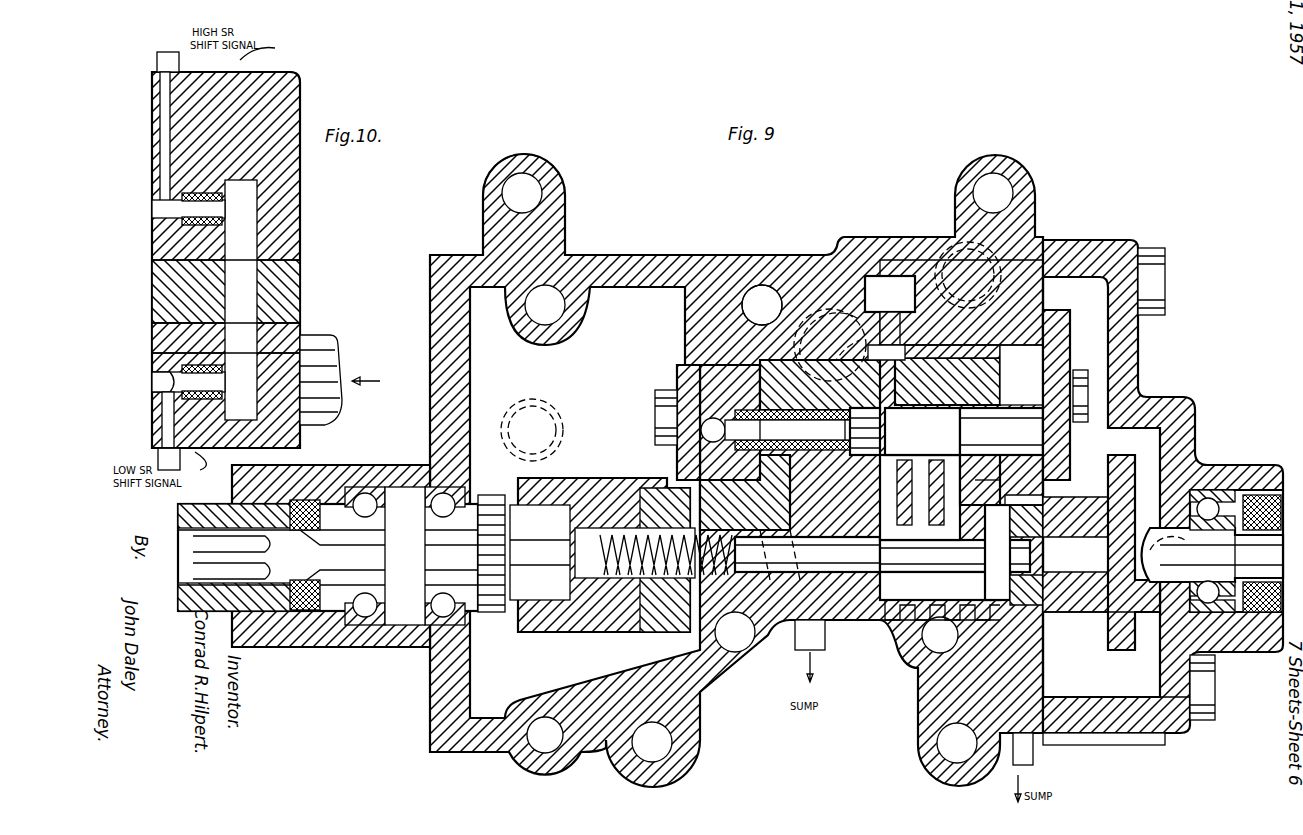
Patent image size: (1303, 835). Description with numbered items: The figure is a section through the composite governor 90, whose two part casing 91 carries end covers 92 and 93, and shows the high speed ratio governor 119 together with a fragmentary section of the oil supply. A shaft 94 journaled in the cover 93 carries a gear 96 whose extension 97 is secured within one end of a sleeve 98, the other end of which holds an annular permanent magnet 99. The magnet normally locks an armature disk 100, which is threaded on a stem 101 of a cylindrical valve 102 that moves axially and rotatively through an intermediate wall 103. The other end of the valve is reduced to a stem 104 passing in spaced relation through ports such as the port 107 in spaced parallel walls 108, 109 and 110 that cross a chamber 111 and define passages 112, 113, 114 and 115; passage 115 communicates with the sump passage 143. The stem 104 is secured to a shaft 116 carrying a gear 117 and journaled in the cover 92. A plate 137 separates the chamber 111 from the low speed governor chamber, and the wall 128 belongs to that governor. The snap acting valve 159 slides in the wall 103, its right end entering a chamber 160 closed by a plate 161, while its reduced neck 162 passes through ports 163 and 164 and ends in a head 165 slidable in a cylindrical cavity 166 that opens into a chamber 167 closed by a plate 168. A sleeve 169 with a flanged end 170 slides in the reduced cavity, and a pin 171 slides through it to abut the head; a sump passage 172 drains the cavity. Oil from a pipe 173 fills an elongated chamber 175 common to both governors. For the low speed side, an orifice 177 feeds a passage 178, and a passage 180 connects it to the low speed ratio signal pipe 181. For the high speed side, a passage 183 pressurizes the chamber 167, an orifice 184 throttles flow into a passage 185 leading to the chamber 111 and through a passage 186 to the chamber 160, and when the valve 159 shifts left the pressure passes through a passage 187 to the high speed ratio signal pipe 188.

In FIG. 9, the composite governor 90 is at (888, 212).
In FIG. 10, the casing 91 is at (311, 81).
In FIG. 9, the casing 91 is at (676, 256).
In FIG. 9, the end cover 92 is at (1135, 245).
In FIG. 9, the end cover 93 is at (430, 681).
In FIG. 9, the shaft 94 is at (328, 557).
In FIG. 9, the gear 96 is at (490, 495).
In FIG. 9, the extension 97 is at (540, 552).
In FIG. 9, the sleeve 98 is at (580, 478).
In FIG. 9, the permanent magnet 99 is at (608, 510).
In FIG. 9, the armature disk 100 is at (715, 530).
In FIG. 9, the stem 101 is at (807, 555).
In FIG. 9, the cylindrical valve 102 is at (870, 556).
In FIG. 10, the intermediate wall 103 is at (295, 165).
In FIG. 9, the intermediate wall 103 is at (740, 272).
In FIG. 9, the stem 104 is at (940, 577).
In FIG. 9, the port 107 is at (1014, 555).
In FIG. 9, the wall 108 is at (901, 493).
In FIG. 9, the wall 109 is at (991, 474).
In FIG. 9, the wall 110 is at (1000, 492).
In FIG. 9, the chamber 111 is at (895, 615).
In FIG. 9, the passage 112 is at (895, 483).
In FIG. 9, the passage 113 is at (927, 483).
In FIG. 9, the passage 114 is at (980, 475).
In FIG. 9, the passage 115 is at (1021, 491).
In FIG. 9, the shaft 116 is at (1213, 551).
In FIG. 9, the gear 117 is at (1115, 455).
In FIG. 9, the high speed ratio governor 119 is at (618, 243).
In FIG. 10, the wall 128 is at (300, 444).
In FIG. 10, the separator plate 137 is at (300, 280).
In FIG. 9, the sump passage 143 is at (1043, 650).
In FIG. 9, the snap acting valve 159 is at (1001, 431).
In FIG. 9, the chamber 160 is at (1058, 340).
In FIG. 9, the plate 161 is at (1068, 350).
In FIG. 9, the reduced neck 162 is at (922, 431).
In FIG. 9, the port 163 is at (947, 380).
In FIG. 9, the port 164 is at (945, 359).
In FIG. 9, the head 165 is at (866, 431).
In FIG. 9, the cylindrical cavity 166 is at (820, 385).
In FIG. 9, the chamber 167 is at (668, 436).
In FIG. 9, the plate 168 is at (677, 368).
In FIG. 9, the sleeve 169 is at (793, 425).
In FIG. 9, the flanged end 170 is at (730, 422).
In FIG. 9, the pin 171 is at (787, 429).
In FIG. 9, the sump passage 172 is at (790, 497).
In FIG. 10, the pipe 173 is at (318, 345).
In FIG. 10, the chamber 175 is at (250, 235).
In FIG. 9, the chamber 175 is at (890, 310).
In FIG. 10, the orifice 177 is at (182, 368).
In FIG. 10, the passage 178 is at (160, 356).
In FIG. 10, the passage 180 is at (162, 410).
In FIG. 10, the low speed ratio signal pipe 181 is at (158, 455).
In FIG. 9, the passage 183 is at (760, 345).
In FIG. 9, the orifice 184 is at (961, 302).
In FIG. 9, the passage 185 is at (876, 358).
In FIG. 9, the passage 186 is at (1012, 375).
In FIG. 10, the passage 187 is at (160, 145).
In FIG. 10, the high speed ratio signal pipe 188 is at (143, 57).